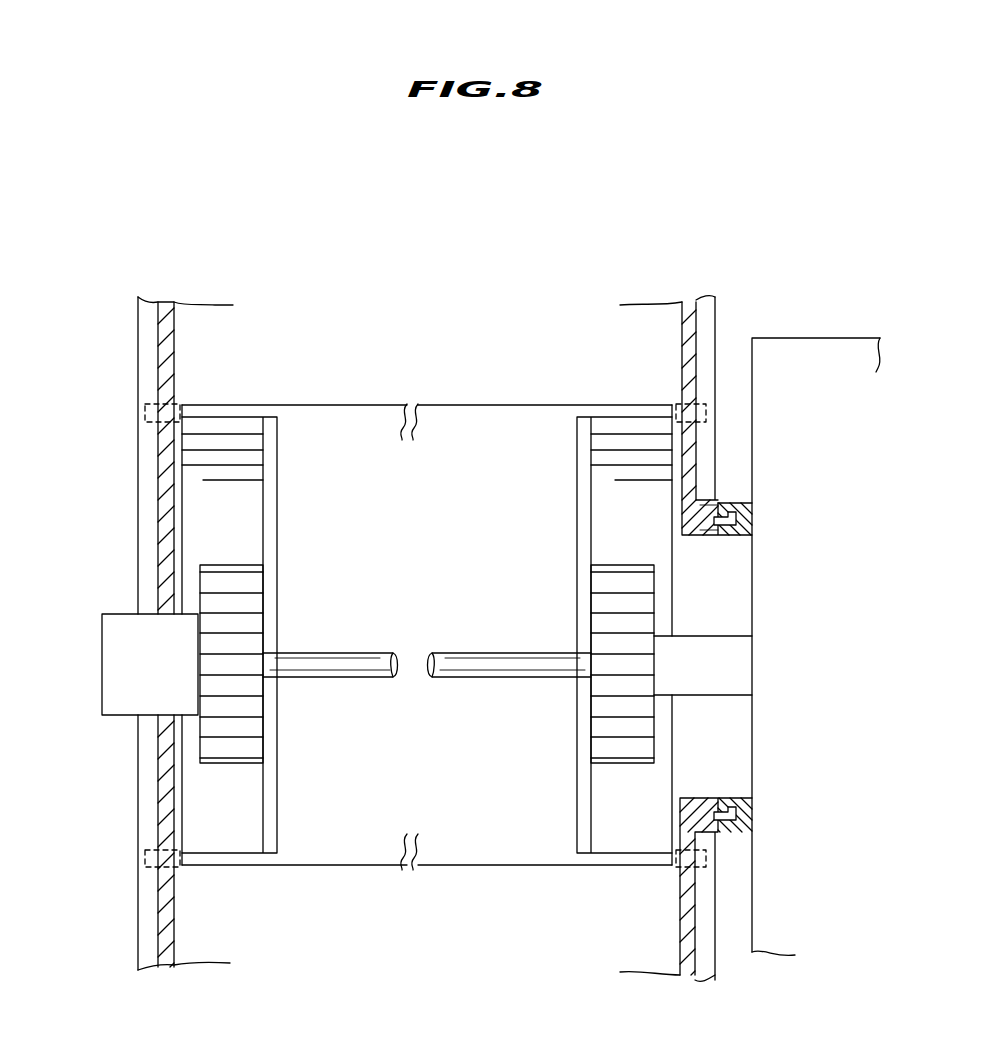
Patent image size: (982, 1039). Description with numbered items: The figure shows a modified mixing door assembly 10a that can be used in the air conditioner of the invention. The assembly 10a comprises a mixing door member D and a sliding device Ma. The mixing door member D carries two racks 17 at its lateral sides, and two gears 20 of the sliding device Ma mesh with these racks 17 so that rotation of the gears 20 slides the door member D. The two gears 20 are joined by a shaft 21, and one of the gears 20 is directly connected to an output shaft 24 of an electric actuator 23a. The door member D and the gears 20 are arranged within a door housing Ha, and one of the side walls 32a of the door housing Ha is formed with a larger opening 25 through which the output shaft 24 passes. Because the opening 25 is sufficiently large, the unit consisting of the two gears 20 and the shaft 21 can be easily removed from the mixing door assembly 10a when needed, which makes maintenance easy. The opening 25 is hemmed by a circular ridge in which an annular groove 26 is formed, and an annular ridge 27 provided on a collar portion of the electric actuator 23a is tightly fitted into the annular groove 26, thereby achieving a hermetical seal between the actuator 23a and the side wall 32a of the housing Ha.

The mixing door assembly 10a is at (140, 262).
The door housing Ha is at (207, 318).
The side wall 32a is at (158, 338).
The electric actuator 23a is at (845, 362).
The racks 17 is at (630, 440).
The gears 20 is at (232, 750).
The shaft 21 is at (478, 668).
The output shaft 24 is at (728, 683).
The opening 25 is at (698, 796).
The annular groove 26 is at (707, 537).
The annular ridge 27 is at (737, 517).
The mixing door member D is at (348, 843).
The sliding device Ma is at (120, 724).